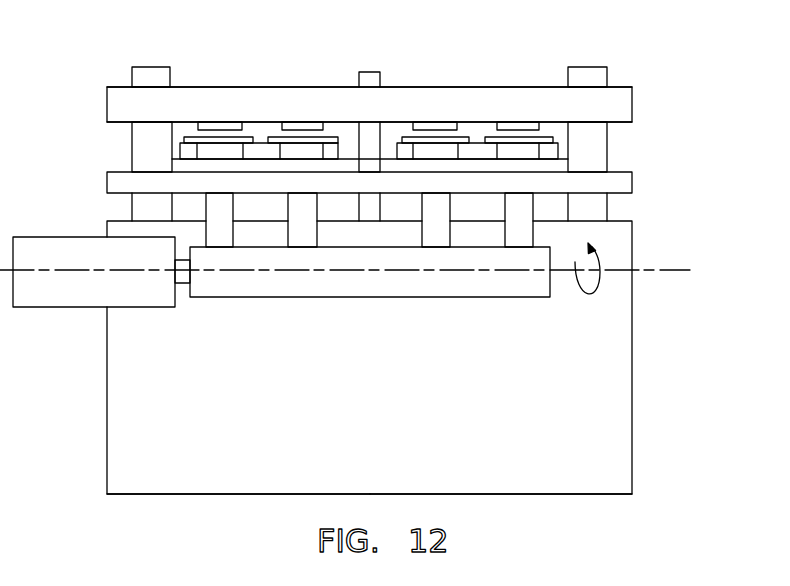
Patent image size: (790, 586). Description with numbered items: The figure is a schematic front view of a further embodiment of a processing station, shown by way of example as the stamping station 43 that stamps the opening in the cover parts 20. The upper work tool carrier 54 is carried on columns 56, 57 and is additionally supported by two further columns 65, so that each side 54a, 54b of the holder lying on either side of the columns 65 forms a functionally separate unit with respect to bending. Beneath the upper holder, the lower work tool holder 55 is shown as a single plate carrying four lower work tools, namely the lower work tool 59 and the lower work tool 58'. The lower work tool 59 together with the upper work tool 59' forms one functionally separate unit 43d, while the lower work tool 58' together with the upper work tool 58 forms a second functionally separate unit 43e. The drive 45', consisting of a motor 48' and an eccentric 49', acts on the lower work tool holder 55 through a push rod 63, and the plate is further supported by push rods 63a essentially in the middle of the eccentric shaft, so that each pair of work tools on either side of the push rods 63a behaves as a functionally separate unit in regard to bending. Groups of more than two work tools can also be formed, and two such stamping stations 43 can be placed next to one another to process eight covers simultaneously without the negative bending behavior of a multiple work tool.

The upper work tool carrier 54 is at (122, 103).
The side of the upper work tool holder 54a is at (197, 98).
The side of the upper work tool holder 54b is at (448, 100).
The column 56 is at (140, 78).
The column 57 is at (587, 74).
The additional column 65 is at (371, 72).
The lower work tool carrier 55 is at (615, 182).
The upper work tool 59' is at (260, 92).
The lower work tool 59 is at (206, 118).
The upper work tool 58 is at (476, 95).
The lower work tool 58' is at (524, 114).
The cover part 20 is at (196, 139).
The push rod 63 is at (218, 233).
The further push rod 63a is at (435, 240).
The stamping station 43 is at (658, 352).
The functionally separate unit 43d is at (172, 460).
The functionally separate unit 43e is at (574, 457).
The eccentric 49' is at (370, 295).
The motor 48' is at (94, 255).
The drive 45' is at (155, 321).